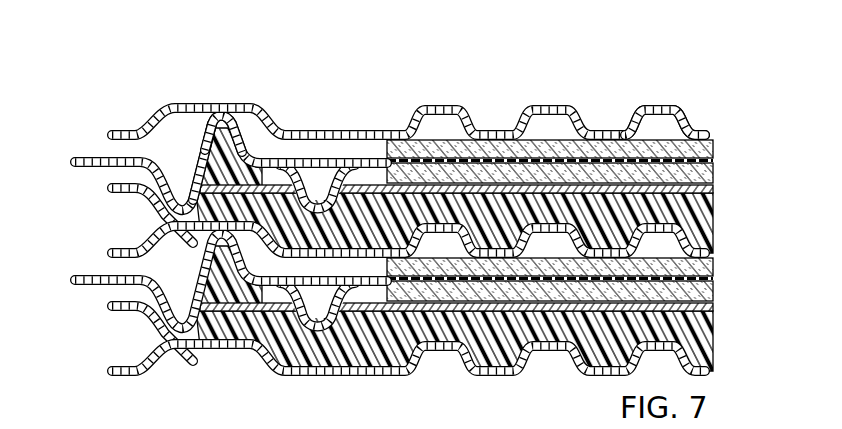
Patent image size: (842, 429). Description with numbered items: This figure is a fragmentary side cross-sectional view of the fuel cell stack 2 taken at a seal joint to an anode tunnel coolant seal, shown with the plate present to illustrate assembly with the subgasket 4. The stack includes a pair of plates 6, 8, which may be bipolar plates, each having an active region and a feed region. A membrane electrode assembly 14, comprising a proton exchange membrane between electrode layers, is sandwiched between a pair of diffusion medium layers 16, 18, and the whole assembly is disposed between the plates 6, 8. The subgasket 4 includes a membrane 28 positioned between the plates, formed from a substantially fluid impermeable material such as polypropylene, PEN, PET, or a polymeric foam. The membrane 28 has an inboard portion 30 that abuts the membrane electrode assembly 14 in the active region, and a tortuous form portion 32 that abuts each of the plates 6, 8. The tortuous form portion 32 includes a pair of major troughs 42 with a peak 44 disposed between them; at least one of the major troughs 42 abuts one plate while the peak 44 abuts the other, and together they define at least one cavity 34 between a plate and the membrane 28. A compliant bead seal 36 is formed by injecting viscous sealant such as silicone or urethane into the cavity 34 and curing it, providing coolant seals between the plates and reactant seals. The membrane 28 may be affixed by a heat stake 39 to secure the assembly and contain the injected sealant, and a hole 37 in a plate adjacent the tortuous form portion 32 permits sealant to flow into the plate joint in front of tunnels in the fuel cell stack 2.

The fuel cell stack 2 is at (398, 195).
The subgasket 4 is at (209, 136).
The membrane 28 is at (78, 157).
The major troughs 42 is at (176, 182).
The compliant bead seal 36 is at (193, 200).
The peak 44 is at (210, 104).
The cavity 34 is at (233, 117).
The tortuous form portion 32 is at (228, 122).
The inboard portion 30 is at (576, 125).
The plate 6 is at (701, 140).
The diffusion medium layer 16 is at (704, 145).
The membrane electrode assembly 14 is at (702, 161).
The diffusion medium layer 18 is at (706, 172).
The plate 8 is at (706, 212).
The heat stake 39 is at (175, 218).
The hole 37 is at (200, 250).